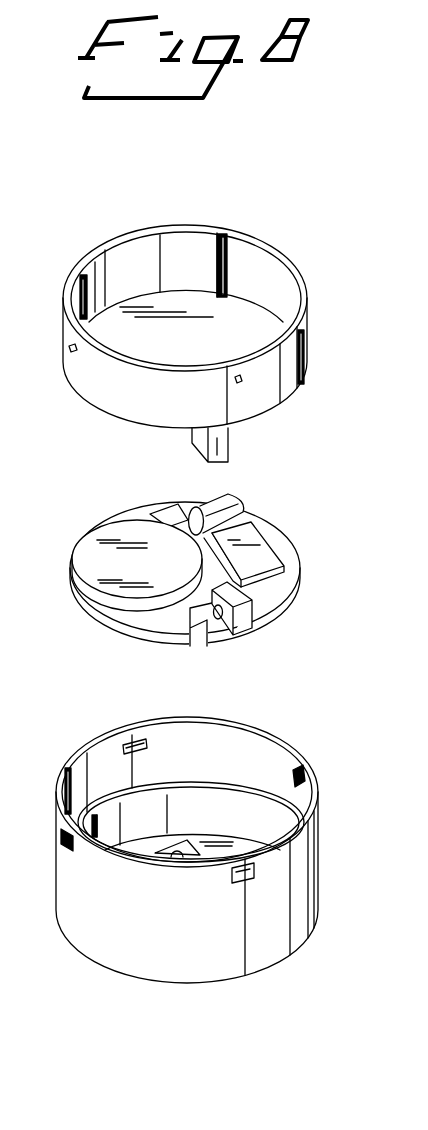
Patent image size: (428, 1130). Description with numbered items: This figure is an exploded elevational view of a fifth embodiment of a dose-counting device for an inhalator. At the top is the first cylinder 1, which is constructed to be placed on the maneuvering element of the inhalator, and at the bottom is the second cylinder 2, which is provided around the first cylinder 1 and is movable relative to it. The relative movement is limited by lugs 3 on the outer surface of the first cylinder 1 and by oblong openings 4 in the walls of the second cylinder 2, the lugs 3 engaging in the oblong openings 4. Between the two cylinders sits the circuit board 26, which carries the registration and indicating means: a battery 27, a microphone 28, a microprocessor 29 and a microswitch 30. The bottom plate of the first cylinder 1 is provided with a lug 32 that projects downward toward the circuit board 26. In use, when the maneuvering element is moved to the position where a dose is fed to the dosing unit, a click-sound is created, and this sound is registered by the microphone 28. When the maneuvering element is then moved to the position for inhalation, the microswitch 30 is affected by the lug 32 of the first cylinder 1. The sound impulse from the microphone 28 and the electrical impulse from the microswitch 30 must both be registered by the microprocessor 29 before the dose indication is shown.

The first cylinder 1 is at (253, 227).
The second cylinder 2 is at (312, 746).
The lug 3 is at (70, 350).
The oblong opening 4 is at (63, 838).
The circuit board 26 is at (112, 512).
The battery 27 is at (86, 552).
The microphone 28 is at (233, 508).
The microprocessor 29 is at (268, 555).
The microswitch 30 is at (248, 612).
The lug 32 is at (220, 443).